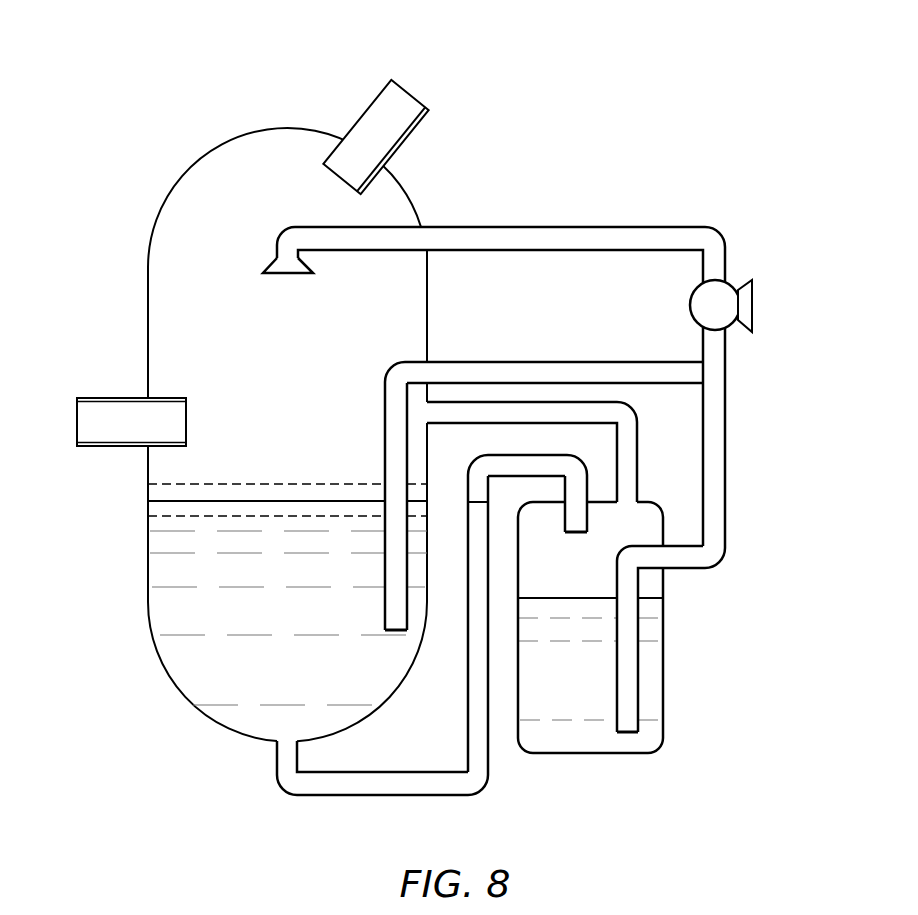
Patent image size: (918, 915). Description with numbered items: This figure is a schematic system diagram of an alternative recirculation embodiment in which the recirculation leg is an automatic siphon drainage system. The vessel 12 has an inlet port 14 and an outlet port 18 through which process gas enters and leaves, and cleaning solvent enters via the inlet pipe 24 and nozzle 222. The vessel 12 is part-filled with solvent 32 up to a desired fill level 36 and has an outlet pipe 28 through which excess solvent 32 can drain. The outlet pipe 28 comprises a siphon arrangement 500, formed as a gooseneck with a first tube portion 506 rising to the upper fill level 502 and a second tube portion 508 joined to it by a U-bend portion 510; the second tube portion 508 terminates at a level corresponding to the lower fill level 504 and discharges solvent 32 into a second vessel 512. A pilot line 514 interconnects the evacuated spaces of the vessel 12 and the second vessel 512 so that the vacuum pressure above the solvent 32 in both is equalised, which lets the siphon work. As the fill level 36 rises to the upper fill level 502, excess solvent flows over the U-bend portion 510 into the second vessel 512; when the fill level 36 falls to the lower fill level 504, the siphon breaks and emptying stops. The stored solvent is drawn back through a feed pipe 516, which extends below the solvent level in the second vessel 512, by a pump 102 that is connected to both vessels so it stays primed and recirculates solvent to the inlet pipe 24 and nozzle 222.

The vessel 12 is at (147, 234).
The inlet port 14 is at (103, 397).
The outlet port 18 is at (378, 98).
The inlet pipe 24 is at (534, 226).
The outlet pipe 28 is at (372, 797).
The solvent 32 is at (275, 670).
The fill level 36 is at (231, 500).
The pump 102 is at (690, 305).
The nozzle 222 is at (287, 274).
The siphon arrangement 500 is at (757, 564).
The upper fill level 502 is at (330, 483).
The lower fill level 504 is at (322, 518).
The first tube portion 506 is at (468, 729).
The second tube portion 508 is at (589, 521).
The U-bend portion 510 is at (503, 455).
The second vessel 512 is at (665, 703).
The pilot line 514 is at (638, 438).
The feed pipe 516 is at (555, 362).